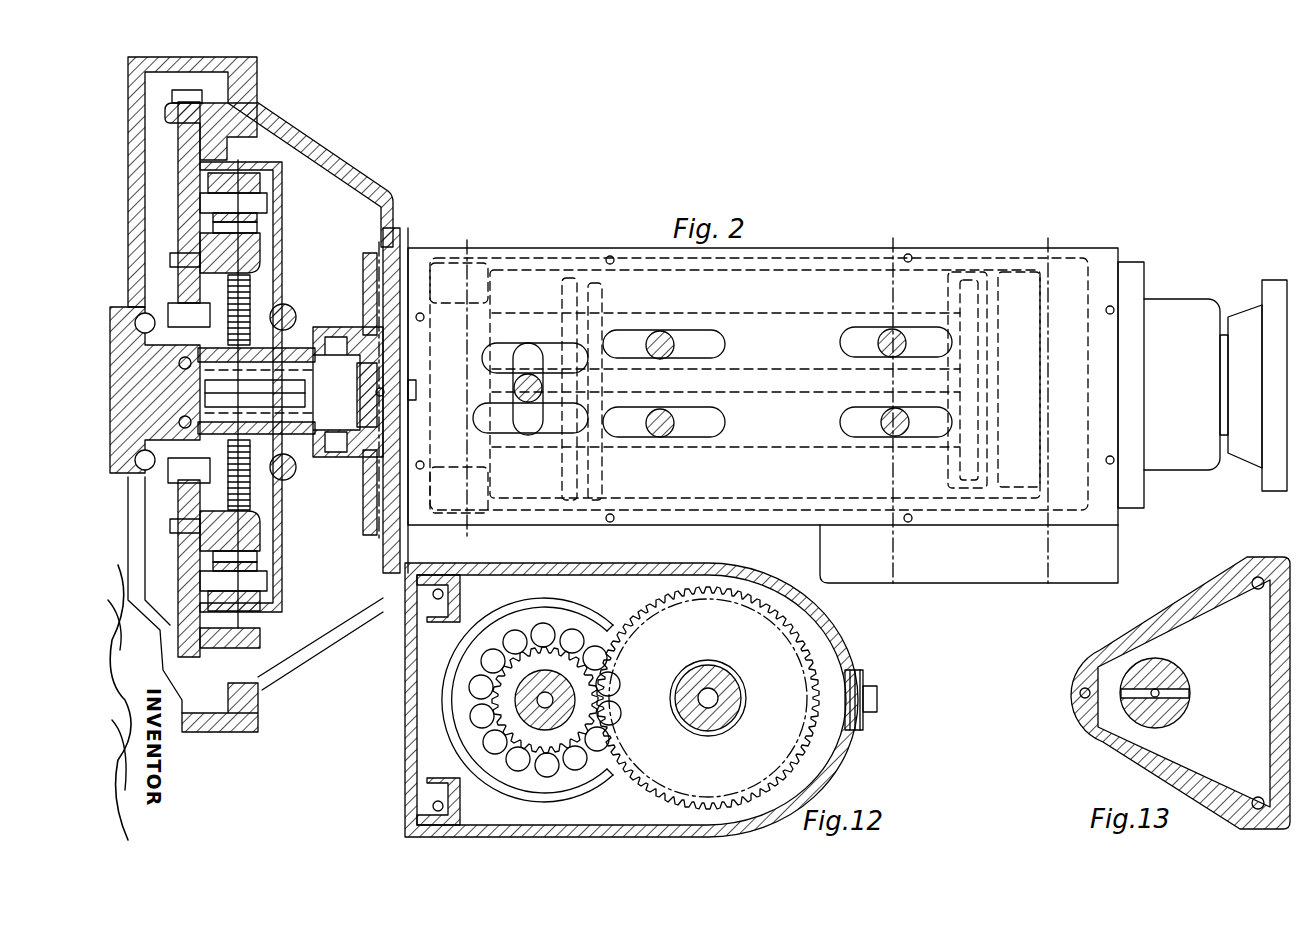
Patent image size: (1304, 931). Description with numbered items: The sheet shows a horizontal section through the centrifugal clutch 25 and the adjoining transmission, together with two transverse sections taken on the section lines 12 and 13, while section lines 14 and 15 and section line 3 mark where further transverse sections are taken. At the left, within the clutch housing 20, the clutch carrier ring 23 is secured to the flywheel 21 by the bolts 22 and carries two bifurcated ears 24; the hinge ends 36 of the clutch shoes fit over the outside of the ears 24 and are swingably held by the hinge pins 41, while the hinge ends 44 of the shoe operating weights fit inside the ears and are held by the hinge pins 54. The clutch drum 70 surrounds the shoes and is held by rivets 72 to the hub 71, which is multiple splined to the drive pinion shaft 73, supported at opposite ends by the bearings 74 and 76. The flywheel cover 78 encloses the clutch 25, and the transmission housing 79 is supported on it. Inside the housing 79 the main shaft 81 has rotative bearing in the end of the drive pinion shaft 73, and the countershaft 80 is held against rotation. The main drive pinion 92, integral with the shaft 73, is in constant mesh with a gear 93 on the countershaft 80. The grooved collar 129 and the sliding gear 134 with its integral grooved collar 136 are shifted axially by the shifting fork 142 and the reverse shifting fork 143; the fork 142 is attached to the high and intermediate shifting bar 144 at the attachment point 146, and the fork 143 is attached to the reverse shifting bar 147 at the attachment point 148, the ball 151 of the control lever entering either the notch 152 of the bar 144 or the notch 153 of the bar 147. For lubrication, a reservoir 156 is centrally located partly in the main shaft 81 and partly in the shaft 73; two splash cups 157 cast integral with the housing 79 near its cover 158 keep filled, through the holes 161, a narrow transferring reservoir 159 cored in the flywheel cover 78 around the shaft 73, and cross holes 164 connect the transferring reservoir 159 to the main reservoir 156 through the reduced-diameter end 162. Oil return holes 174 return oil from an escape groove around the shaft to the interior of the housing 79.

In FIG. 2, the section line 3- 3 is at (268, 160).
In FIG. 2, the transverse section line 12 is at (478, 240).
In FIG. 2, the transverse section line 13 is at (378, 242).
In FIG. 2, the transverse section line 14 is at (905, 238).
In FIG. 2, the transverse section line 15 is at (1060, 238).
In FIG. 2, the housing 20 is at (128, 118).
In FIG. 2, the flywheel 21 is at (172, 138).
In FIG. 2, the bolts 22 is at (178, 260).
In FIG. 2, the clutch carrier ring 23 is at (178, 238).
In FIG. 2, the bifurcated ears 24 is at (245, 262).
In FIG. 2, the centrifugal clutch 25 is at (283, 215).
In FIG. 2, the hinge ends 36 is at (205, 185).
In FIG. 2, the hinge pins 41 is at (258, 205).
In FIG. 2, the hinge ends 44 is at (242, 185).
In FIG. 2, the hinge pins 54 is at (258, 228).
In FIG. 2, the clutch drum 70 is at (330, 150).
In FIG. 2, the hub 71 is at (290, 305).
In FIG. 2, the rivets 72 is at (345, 327).
In FIG. 2, the drive pinion shaft 73 is at (337, 337).
In FIG. 13, the drive pinion shaft 73 is at (1168, 720).
In FIG. 2, the bearing 74 is at (178, 365).
In FIG. 2, the bearing 76 is at (395, 262).
In FIG. 12, the bearing 76 is at (540, 640).
In FIG. 2, the flywheel cover 78 is at (358, 170).
In FIG. 2, the transmission housing 79 is at (440, 255).
In FIG. 12, the transmission housing 79 is at (641, 700).
In FIG. 12, the countershaft 80 is at (700, 720).
In FIG. 12, the main shaft 81 is at (537, 722).
In FIG. 12, the main drive pinion 92 is at (555, 660).
In FIG. 12, the gear 93 is at (655, 620).
In FIG. 2, the grooved collar 129 is at (595, 290).
In FIG. 2, the sliding gear 134 is at (1020, 272).
In FIG. 2, the grooved collar 136 is at (978, 282).
In FIG. 2, the shifting fork 142 is at (570, 285).
In FIG. 2, the reverse shifting fork 143 is at (965, 275).
In FIG. 2, the high and intermediate shifting bar 144 is at (765, 447).
In FIG. 2, the attachment point 146 is at (582, 447).
In FIG. 2, the reverse shifting bar 147 is at (792, 330).
In FIG. 2, the attachment point 148 is at (965, 330).
In FIG. 2, the ball 151 is at (515, 370).
In FIG. 2, the notch 152 is at (527, 420).
In FIG. 2, the notch 153 is at (527, 378).
In FIG. 2, the reservoir 156 is at (408, 390).
In FIG. 2, the splash cups 157 is at (448, 296).
In FIG. 12, the splash cups 157 is at (430, 605).
In FIG. 2, the cover 158 is at (460, 265).
In FIG. 2, the transferring reservoir 159 is at (363, 488).
In FIG. 13, the transferring reservoir 159 is at (1115, 748).
In FIG. 2, the holes 161 is at (422, 315).
In FIG. 12, the holes 161 is at (443, 592).
In FIG. 13, the holes 161 is at (1252, 580).
In FIG. 2, the reduced-diameter end 162 is at (357, 398).
In FIG. 13, the reduced-diameter end 162 is at (1160, 690).
In FIG. 2, the cross holes 164 is at (357, 380).
In FIG. 13, the cross holes 164 is at (1185, 698).
In FIG. 13, the oil return holes 174 is at (1080, 692).